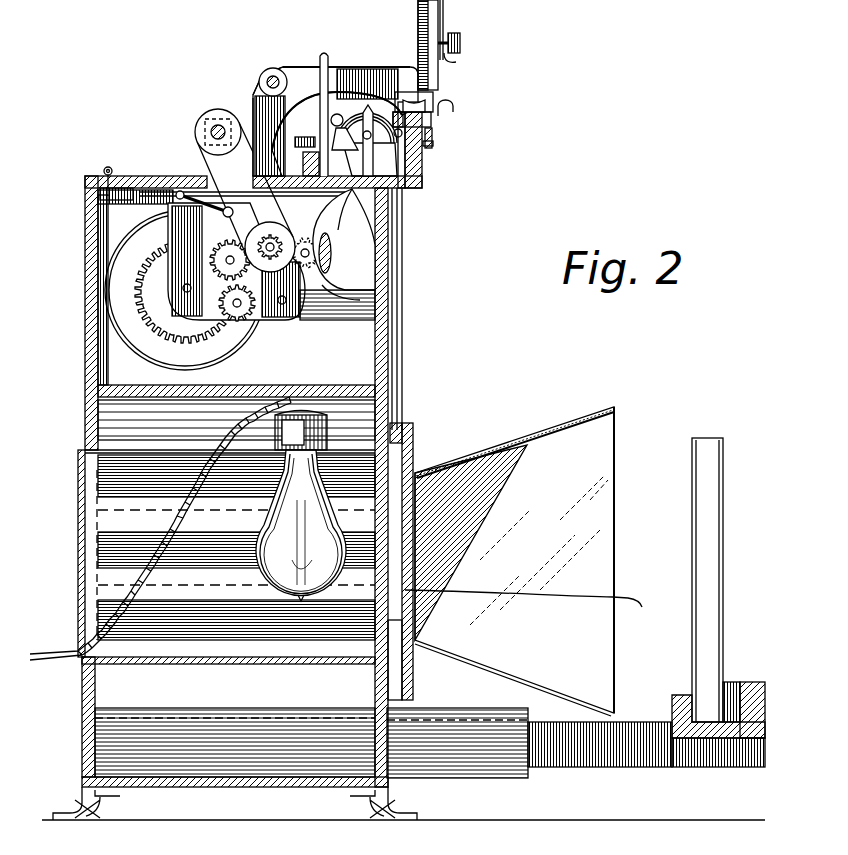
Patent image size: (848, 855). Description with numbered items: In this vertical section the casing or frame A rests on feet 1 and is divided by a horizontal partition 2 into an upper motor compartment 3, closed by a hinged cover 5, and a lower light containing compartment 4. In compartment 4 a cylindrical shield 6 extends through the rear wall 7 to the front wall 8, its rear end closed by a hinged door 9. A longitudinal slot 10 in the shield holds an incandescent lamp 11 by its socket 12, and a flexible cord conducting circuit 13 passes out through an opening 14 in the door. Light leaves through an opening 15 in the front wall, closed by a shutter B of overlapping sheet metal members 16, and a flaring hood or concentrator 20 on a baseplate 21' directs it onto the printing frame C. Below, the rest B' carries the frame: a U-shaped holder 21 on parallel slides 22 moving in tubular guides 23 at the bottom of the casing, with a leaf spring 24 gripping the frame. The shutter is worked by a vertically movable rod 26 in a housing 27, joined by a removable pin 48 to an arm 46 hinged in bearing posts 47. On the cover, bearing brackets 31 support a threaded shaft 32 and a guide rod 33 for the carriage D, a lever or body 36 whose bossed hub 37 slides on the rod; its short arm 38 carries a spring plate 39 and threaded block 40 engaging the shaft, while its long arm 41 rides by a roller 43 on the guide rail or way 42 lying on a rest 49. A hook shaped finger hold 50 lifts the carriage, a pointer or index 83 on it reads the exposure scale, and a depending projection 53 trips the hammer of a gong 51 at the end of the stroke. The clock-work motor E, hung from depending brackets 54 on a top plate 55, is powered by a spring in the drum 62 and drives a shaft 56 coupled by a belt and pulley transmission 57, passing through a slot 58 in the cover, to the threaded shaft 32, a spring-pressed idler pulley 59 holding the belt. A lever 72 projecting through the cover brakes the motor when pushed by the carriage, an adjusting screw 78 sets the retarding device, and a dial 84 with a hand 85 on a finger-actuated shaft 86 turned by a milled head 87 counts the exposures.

The feet 1 is at (95, 812).
The horizontal partition 2 is at (340, 384).
The motor compartment 3 is at (350, 262).
The light containing compartment 4 is at (100, 688).
The hinged cover 5 is at (110, 175).
The cylindrical shield 6 is at (130, 508).
The rear wall 7 is at (85, 422).
The front wall 8 is at (402, 425).
The hinged door 9 is at (80, 503).
The longitudinal slot 10 is at (78, 466).
The incandescent lamp 11 is at (272, 514).
The socket 12 is at (328, 432).
The flexible cord conducting circuit 13 is at (72, 655).
The opening 14 is at (100, 662).
The opening 15 is at (440, 470).
The sheet metal members 16 is at (536, 605).
The hood or concentrator 20 is at (548, 428).
The holder 21 is at (770, 697).
The rectangular frame or baseplate 21' is at (435, 561).
The parallel slides 22 is at (667, 722).
The tubular horizontal guides 23 is at (508, 780).
The leaf spring 24 is at (737, 682).
The rod or actuator 26 is at (354, 191).
The housing 27 is at (400, 327).
The bearing brackets 31 is at (272, 67).
The threaded shaft 32 is at (252, 100).
The guide rod 33 is at (281, 67).
The lever or body 36 is at (302, 66).
The bossed hub 37 is at (266, 70).
The short arm 38 is at (301, 150).
The spring plate 39 is at (242, 160).
The threaded block 40 is at (254, 110).
The long arm 41 is at (393, 80).
The guide rail or way 42 is at (432, 122).
The roller 43 is at (426, 102).
The arm 46 is at (350, 112).
The bearing posts 47 is at (338, 113).
The removable pin 48 is at (432, 146).
The rest 49 is at (422, 172).
The hook shaped finger hold 50 is at (455, 104).
The gong 51 is at (418, 152).
The projection 53 is at (369, 105).
The depending brackets 54 is at (335, 262).
The top plate 55 is at (312, 230).
The shaft 56 is at (320, 274).
The belt and pulley transmission 57 is at (330, 236).
The slot 58 is at (200, 144).
The spring-pressed idler pulley 59 is at (182, 192).
The drum 62 is at (112, 350).
The lever 72 is at (328, 47).
The adjusting screw 78 is at (337, 121).
The pointer or index 83 is at (432, 135).
The dial 84 is at (440, 8).
The hand 85 is at (444, 20).
The finger-actuated shaft 86 is at (457, 62).
The milled head 87 is at (461, 43).
The casing or frame A is at (194, 287).
The shutter B is at (420, 660).
The rest B' is at (646, 768).
The printing frame C is at (725, 580).
The carriage D is at (367, 95).
The motor E is at (193, 290).